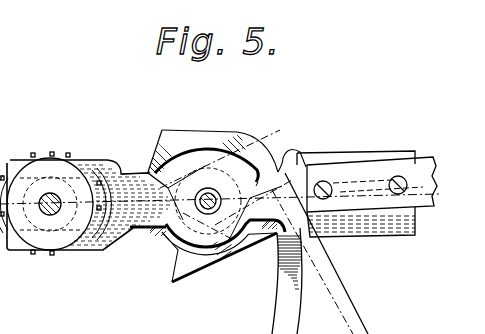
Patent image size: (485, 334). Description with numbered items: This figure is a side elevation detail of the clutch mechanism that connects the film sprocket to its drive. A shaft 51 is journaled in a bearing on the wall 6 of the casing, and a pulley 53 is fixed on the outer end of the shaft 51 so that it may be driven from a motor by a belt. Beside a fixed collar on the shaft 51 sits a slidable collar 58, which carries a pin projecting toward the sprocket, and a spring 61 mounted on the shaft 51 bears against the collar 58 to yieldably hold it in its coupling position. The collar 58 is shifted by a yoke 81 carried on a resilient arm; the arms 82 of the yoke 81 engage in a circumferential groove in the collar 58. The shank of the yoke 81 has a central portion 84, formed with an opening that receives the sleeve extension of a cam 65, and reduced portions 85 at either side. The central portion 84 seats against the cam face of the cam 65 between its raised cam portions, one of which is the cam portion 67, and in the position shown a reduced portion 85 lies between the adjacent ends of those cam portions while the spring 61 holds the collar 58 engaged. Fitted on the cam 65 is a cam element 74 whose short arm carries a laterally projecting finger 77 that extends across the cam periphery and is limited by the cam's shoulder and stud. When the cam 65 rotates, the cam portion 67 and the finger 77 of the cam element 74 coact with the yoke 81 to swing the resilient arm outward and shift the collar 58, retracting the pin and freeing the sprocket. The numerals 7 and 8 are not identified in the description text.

The wall of the casing 6 is at (367, 194).
The frame 7 is at (3, 70).
The base 8 is at (3, 303).
The shaft 51 is at (57, 213).
The pulley 53 is at (198, 281).
The collar 58 is at (43, 167).
The spring 61 is at (8, 36).
The cam 65 is at (207, 140).
The raised cam portion 67 is at (205, 257).
The cam element 74 is at (165, 148).
The finger 77 is at (150, 172).
The yoke 81 is at (125, 172).
The arms of the yoke 82 is at (90, 163).
The central portion of the yoke shank 84 is at (227, 258).
The reduced portion of the yoke shank 85 is at (258, 182).